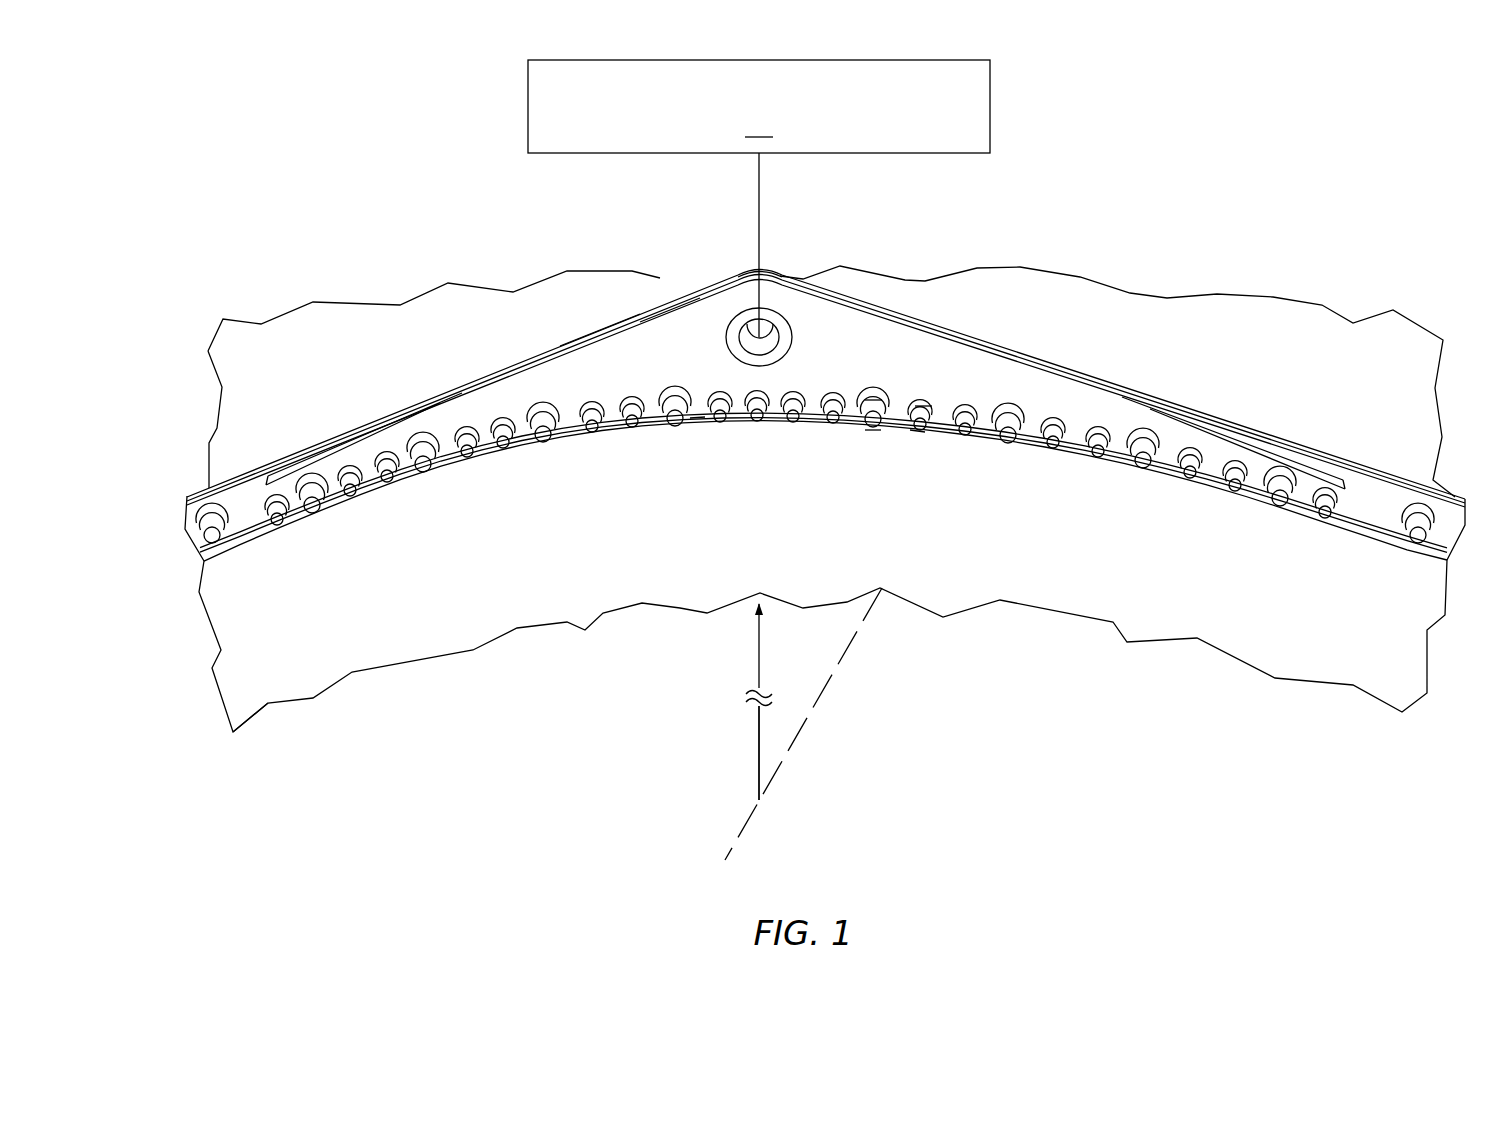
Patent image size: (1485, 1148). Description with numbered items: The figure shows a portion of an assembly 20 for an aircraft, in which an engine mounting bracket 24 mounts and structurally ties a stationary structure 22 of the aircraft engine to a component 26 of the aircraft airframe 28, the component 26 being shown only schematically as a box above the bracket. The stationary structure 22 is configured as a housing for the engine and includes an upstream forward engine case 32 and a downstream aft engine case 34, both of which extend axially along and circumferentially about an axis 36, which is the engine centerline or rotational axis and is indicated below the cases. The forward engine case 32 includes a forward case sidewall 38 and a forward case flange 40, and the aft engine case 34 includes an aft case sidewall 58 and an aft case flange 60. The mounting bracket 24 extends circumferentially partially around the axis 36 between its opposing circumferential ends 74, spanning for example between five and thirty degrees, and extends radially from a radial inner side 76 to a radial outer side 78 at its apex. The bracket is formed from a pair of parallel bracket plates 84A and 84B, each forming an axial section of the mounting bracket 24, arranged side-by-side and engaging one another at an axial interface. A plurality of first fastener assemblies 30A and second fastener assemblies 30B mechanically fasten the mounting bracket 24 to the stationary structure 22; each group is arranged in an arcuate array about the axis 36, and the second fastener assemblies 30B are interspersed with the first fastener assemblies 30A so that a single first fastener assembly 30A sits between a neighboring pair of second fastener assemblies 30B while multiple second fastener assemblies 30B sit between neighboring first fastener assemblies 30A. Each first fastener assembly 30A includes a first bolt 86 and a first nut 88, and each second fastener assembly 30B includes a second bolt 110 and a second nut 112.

The assembly 20 is at (1365, 132).
The stationary structure 22 is at (1425, 307).
The engine mounting bracket 24 is at (879, 302).
The component 26 is at (759, 213).
The aircraft airframe 28 is at (1010, 84).
The first fastener assemblies 30A is at (312, 520).
The second fastener assemblies 30B is at (277, 532).
The forward engine case 32 is at (200, 397).
The aft engine case 34 is at (202, 655).
The axis 36 is at (733, 848).
The forward case sidewall 38 is at (207, 350).
The forward case flange 40 is at (195, 492).
The aft case sidewall 58 is at (268, 704).
The aft case flange 60 is at (184, 533).
The circumferential ends 74 is at (265, 497).
The radial inner side 76 is at (697, 421).
The radial outer side 78 is at (747, 270).
The forward bracket plate 84A is at (632, 305).
The aft bracket plate 84B is at (683, 294).
The first bolt 86 is at (870, 430).
The first nut 88 is at (876, 399).
The second bolt 110 is at (917, 437).
The second nut 112 is at (924, 405).